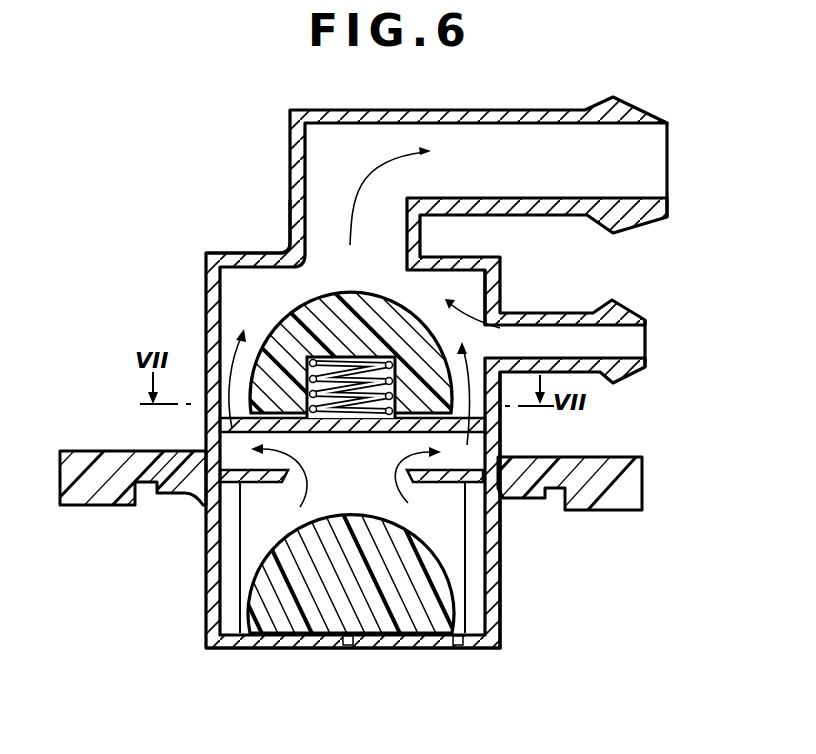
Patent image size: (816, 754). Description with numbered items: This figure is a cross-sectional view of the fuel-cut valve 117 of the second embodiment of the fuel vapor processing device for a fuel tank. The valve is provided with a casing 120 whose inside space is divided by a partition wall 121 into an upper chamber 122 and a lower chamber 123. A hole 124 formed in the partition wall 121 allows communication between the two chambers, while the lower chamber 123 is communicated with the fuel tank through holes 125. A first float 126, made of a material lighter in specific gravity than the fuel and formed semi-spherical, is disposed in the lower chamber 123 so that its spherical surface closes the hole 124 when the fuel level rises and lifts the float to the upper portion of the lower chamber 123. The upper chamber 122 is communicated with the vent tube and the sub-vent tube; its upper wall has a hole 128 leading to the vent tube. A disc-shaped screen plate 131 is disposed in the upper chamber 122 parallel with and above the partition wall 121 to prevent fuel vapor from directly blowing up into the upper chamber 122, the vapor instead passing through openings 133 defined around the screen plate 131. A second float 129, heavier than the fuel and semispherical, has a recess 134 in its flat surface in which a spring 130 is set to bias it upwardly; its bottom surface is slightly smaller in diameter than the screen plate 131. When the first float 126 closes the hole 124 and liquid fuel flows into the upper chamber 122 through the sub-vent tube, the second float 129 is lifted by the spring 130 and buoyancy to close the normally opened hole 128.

The fuel-cut valve 117 is at (626, 277).
The casing 120 is at (207, 278).
The partition wall 121 is at (485, 558).
The upper chamber 122 is at (262, 278).
The lower chamber 123 is at (250, 566).
The hole 124 is at (280, 490).
The holes 125 is at (493, 520).
The first float 126 is at (293, 622).
The hole 128 is at (265, 283).
The second float 129 is at (375, 316).
The spring 130 is at (465, 288).
The screen plate 131 is at (490, 440).
The openings 133 is at (222, 432).
The recess 134 is at (303, 350).